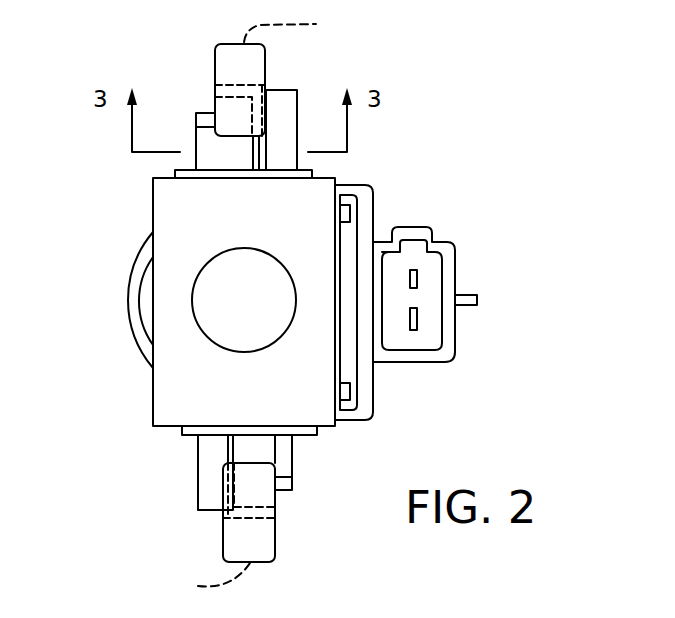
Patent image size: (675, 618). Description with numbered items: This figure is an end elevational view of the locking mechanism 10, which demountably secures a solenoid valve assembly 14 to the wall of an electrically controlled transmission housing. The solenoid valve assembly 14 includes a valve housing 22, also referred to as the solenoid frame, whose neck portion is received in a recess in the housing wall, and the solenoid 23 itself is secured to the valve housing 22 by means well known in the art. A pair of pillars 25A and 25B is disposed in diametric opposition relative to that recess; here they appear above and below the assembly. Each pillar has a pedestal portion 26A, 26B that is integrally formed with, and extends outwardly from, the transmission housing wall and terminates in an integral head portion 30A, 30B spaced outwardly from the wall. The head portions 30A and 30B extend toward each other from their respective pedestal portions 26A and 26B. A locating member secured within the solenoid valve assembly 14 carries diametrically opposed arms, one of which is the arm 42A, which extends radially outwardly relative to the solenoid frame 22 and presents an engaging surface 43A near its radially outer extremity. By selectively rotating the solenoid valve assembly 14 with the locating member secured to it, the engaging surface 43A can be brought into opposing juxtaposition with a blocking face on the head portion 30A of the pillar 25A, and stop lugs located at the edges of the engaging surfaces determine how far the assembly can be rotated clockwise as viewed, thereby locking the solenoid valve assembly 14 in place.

The locking mechanism 10 is at (179, 463).
The solenoid valve assembly 14 is at (141, 400).
The valve housing 22 is at (167, 209).
The solenoid 23 is at (213, 305).
The pillar 25A is at (280, 47).
The pillar 25B is at (292, 565).
The pedestal portion 26A is at (304, 26).
The pedestal portion 26B is at (197, 580).
The head portion 30A is at (235, 118).
The head portion 30B is at (257, 474).
The arm 42A is at (196, 126).
The engaging surface 43A is at (210, 145).